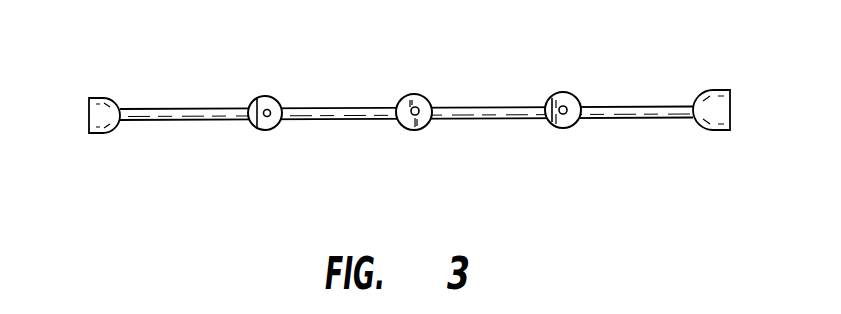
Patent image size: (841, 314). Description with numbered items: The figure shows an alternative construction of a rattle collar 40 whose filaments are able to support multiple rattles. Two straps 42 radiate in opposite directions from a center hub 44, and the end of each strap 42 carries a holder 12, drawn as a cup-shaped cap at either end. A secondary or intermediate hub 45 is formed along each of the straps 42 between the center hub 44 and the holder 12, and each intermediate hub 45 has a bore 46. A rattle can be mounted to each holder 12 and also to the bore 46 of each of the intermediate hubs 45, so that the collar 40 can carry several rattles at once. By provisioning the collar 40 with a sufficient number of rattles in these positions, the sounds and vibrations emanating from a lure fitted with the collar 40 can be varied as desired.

The holder 12 is at (105, 97).
The collar 40 is at (386, 102).
The strap 42 is at (342, 108).
The center hub 44 is at (428, 94).
The intermediate hub 45 is at (273, 97).
The bore 46 is at (257, 98).